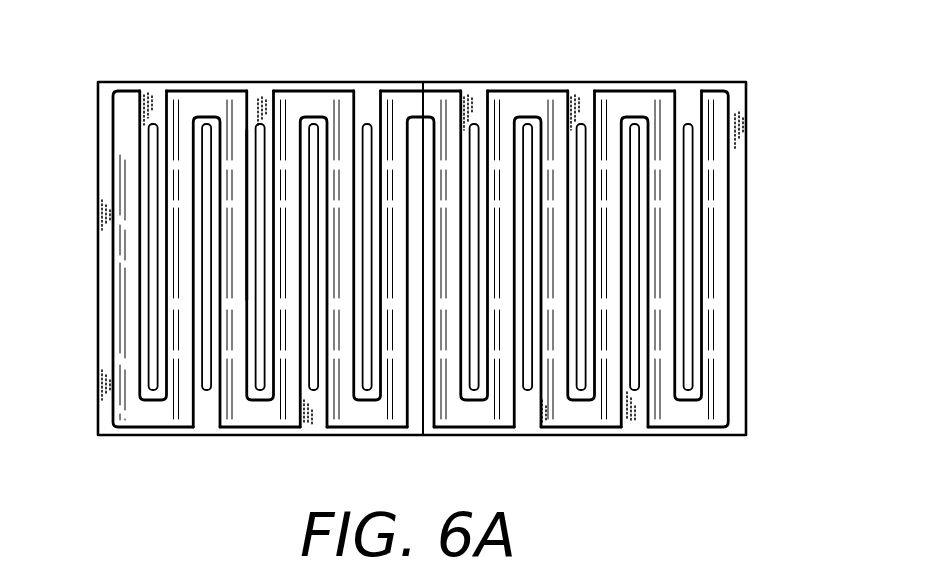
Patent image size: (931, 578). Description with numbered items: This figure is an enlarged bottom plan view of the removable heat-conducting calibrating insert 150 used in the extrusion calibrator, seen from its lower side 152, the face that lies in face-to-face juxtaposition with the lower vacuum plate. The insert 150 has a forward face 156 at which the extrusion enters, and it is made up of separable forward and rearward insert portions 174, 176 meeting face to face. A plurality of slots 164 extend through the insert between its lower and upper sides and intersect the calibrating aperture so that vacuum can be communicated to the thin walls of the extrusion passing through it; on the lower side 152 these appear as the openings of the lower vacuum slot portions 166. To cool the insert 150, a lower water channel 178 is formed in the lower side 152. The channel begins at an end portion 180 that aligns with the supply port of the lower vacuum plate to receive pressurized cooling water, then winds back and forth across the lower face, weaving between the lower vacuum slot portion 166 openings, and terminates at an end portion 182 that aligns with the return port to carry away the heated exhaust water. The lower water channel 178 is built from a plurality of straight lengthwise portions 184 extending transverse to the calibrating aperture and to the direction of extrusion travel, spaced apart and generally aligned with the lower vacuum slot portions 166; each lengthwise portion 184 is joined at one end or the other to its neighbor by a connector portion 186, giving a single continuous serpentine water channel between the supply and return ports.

The calibrating insert 150 is at (597, 83).
The lower side 152 is at (240, 165).
The forward face 156 is at (100, 205).
The slots 164 is at (139, 347).
The lower vacuum slot portion 166 is at (157, 388).
The forward insert portion 174 is at (276, 436).
The rearward insert portion 176 is at (618, 436).
The lower water channel 178 is at (113, 288).
The end portion 180 is at (128, 112).
The end portion 182 is at (722, 103).
The lengthwise portions 184 is at (128, 147).
The connector portion 186 is at (218, 92).